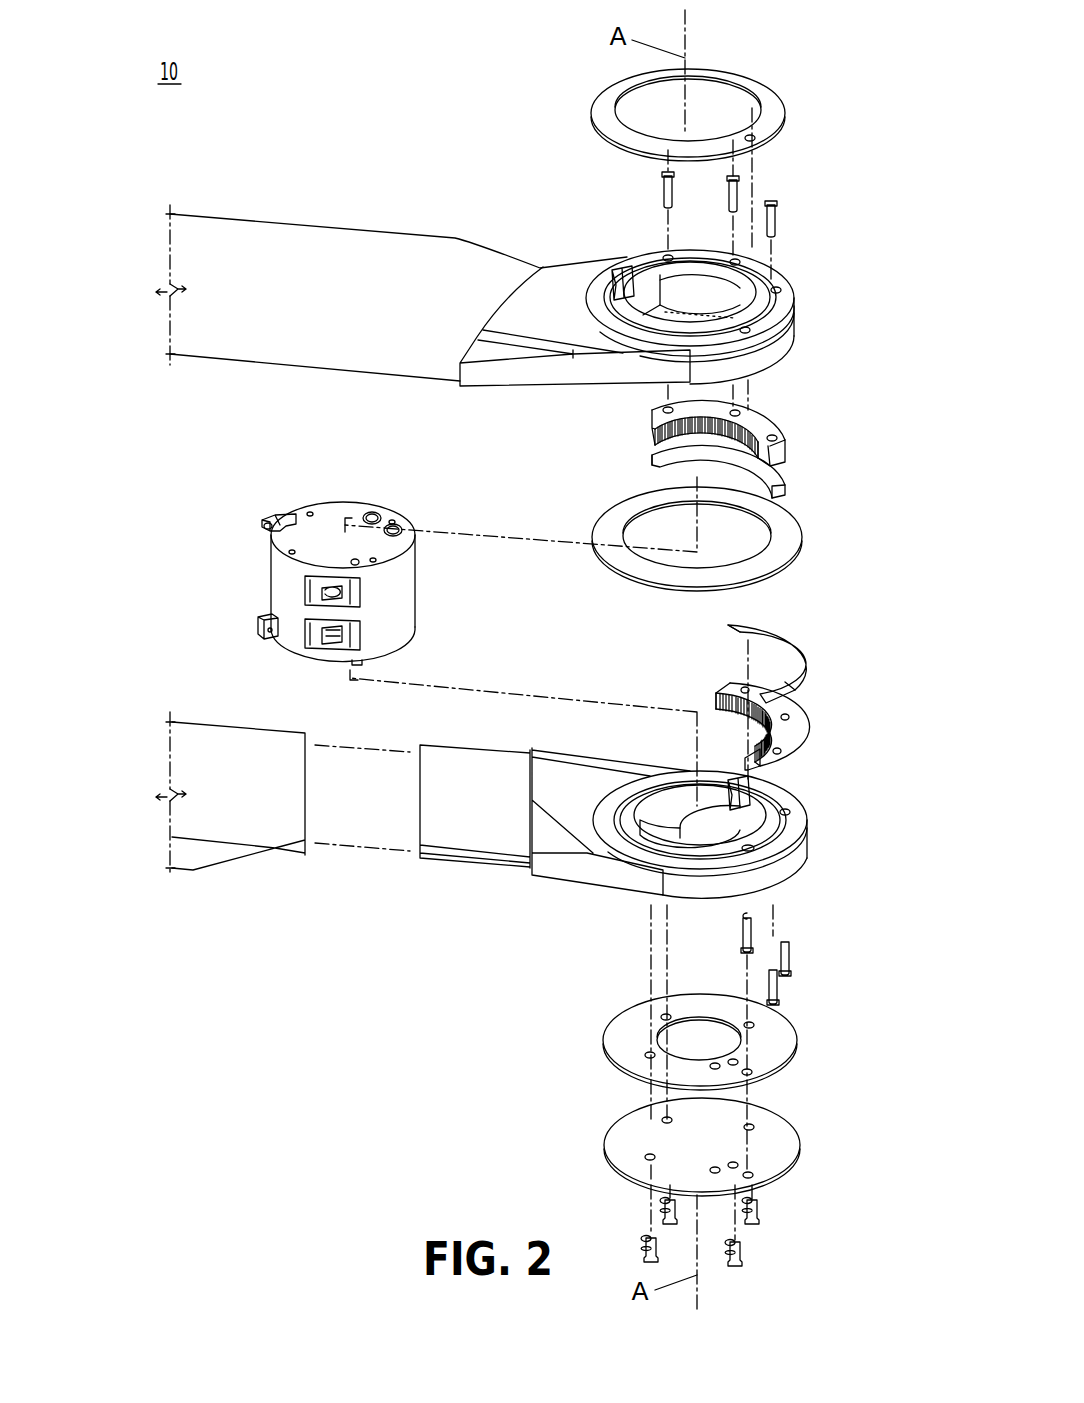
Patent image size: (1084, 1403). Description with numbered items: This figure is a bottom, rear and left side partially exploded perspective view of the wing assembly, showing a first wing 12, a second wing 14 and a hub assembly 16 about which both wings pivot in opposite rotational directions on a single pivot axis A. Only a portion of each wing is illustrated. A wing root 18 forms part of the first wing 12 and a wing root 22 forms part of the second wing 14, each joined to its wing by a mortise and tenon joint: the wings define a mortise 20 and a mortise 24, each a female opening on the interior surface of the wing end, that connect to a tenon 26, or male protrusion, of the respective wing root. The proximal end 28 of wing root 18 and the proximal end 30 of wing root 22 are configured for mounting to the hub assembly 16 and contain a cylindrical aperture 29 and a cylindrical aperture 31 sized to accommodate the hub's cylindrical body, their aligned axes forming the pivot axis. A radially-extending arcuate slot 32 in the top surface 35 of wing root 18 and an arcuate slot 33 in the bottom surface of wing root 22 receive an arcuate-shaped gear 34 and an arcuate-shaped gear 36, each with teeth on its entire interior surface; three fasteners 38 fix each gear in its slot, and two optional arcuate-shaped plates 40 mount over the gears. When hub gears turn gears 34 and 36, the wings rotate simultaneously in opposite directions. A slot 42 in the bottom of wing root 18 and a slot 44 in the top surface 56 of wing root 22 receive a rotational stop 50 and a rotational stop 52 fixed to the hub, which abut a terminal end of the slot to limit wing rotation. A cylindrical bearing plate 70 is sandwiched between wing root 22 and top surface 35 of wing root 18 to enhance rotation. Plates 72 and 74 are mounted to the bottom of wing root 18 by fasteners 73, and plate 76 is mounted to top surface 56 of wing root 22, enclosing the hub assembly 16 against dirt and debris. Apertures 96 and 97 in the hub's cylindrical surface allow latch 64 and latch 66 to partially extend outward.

The first wing 12 is at (205, 773).
The second wing 14 is at (252, 254).
The hub assembly 16 is at (252, 563).
The wing root 18 is at (565, 780).
The mortise 20 is at (215, 748).
The wing root 22 is at (560, 376).
The mortise 24 is at (330, 342).
The tenon 26 is at (470, 825).
The proximal end 28 is at (800, 851).
The cylindrical aperture 29 is at (688, 808).
The proximal end 30 is at (786, 338).
The cylindrical aperture 31 is at (697, 275).
The arcuate slot 32 is at (790, 810).
The arcuate slot 33 is at (716, 289).
The arcuate-shaped gear 34 is at (782, 707).
The top surface 35 is at (630, 842).
The arcuate-shaped gear 36 is at (780, 433).
The fasteners 38 is at (777, 212).
The arcuate-shaped plates 40 is at (780, 479).
The slot 42 is at (650, 825).
The slot 44 is at (608, 290).
The rotational stop 50 is at (260, 632).
The rotational stop 52 is at (275, 520).
The top surface 56 is at (655, 330).
The latch 64 is at (352, 632).
The latch 66 is at (358, 586).
The cylindrical bearing plate 70 is at (786, 530).
The plate 72 is at (775, 1028).
The fasteners 73 is at (646, 1242).
The plate 74 is at (775, 1125).
The plate 76 is at (766, 104).
The aperture 96 is at (318, 645).
The aperture 97 is at (315, 585).